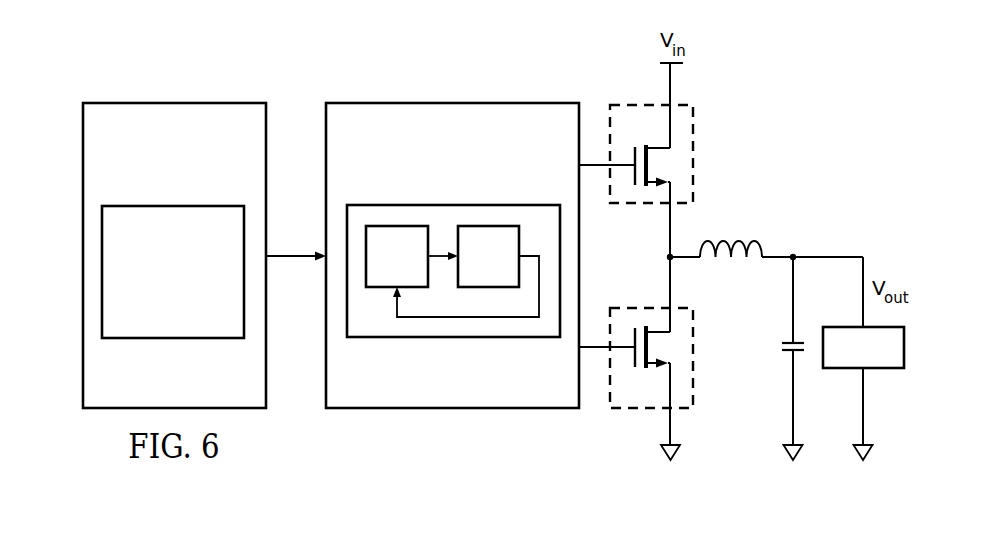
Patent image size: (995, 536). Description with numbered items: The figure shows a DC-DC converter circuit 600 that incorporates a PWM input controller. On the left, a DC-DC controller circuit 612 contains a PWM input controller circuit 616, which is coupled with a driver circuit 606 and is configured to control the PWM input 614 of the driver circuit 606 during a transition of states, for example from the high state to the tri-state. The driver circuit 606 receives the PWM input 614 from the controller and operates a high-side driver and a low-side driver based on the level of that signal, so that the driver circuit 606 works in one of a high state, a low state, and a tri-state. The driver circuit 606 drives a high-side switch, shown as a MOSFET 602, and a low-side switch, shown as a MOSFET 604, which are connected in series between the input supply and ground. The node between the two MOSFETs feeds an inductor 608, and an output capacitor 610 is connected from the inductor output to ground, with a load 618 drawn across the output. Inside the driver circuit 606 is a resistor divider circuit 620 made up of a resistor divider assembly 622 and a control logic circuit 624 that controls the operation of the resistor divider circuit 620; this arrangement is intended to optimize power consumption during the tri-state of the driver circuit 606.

The DC-DC converter circuit 600 is at (860, 128).
The MOSFET 602 is at (642, 105).
The MOSFET 604 is at (642, 408).
The driver circuit 606 is at (453, 103).
The inductor 608 is at (740, 240).
The output capacitor 610 is at (780, 345).
The DC-DC controller circuit 612 is at (173, 103).
The PWM input 614 is at (305, 255).
The PWM input controller circuit 616 is at (173, 338).
The load 618 is at (883, 368).
The resistor divider circuit 620 is at (453, 303).
The resistor divider assembly 622 is at (417, 268).
The control logic circuit 624 is at (508, 268).